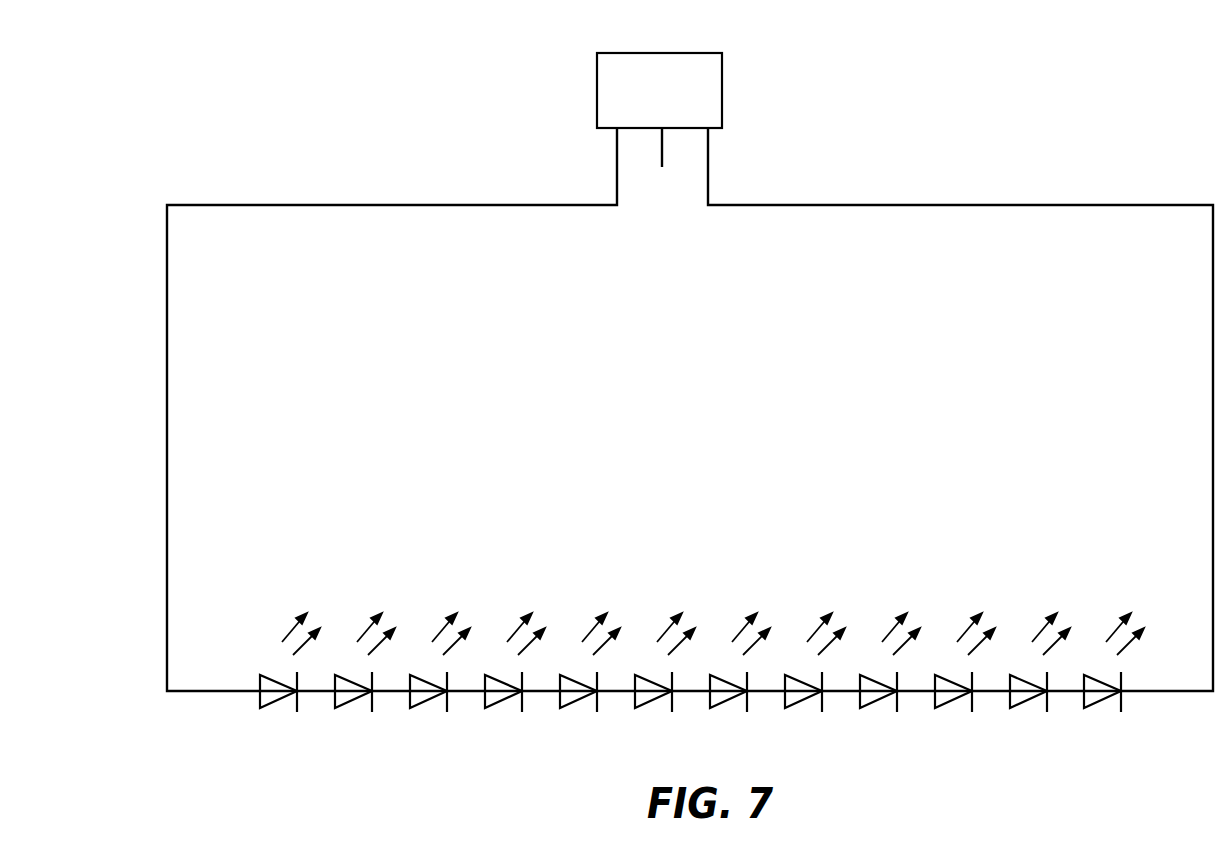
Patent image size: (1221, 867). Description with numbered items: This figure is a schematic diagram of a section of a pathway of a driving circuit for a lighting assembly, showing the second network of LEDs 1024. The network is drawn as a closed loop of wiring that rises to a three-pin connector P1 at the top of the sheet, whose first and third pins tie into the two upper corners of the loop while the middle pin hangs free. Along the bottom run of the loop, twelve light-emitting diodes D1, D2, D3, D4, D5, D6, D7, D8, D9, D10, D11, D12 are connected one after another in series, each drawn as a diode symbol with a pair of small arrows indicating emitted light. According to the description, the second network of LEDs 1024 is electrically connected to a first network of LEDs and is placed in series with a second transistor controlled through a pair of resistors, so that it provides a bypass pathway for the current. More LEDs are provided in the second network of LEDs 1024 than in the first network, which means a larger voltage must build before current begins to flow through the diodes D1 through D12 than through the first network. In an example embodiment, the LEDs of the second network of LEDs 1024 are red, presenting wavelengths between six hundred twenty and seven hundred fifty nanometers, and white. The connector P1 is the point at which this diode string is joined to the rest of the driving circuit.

The second network of LEDs 1024 is at (690, 387).
The connector P1 is at (659, 76).
The light emitting diode D1 is at (289, 680).
The light emitting diode D2 is at (364, 680).
The light emitting diode D3 is at (439, 681).
The light emitting diode D4 is at (514, 681).
The light emitting diode D5 is at (589, 680).
The light emitting diode D6 is at (664, 681).
The light emitting diode D7 is at (739, 680).
The light emitting diode D8 is at (814, 679).
The light emitting diode D9 is at (888, 681).
The light emitting diode D10 is at (962, 681).
The light emitting diode D11 is at (1037, 680).
The light emitting diode D12 is at (1112, 680).